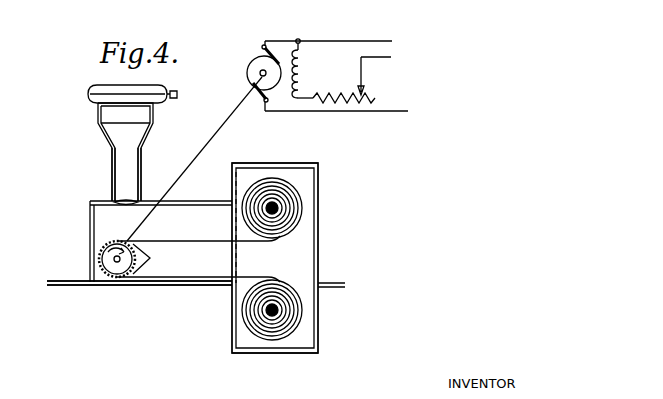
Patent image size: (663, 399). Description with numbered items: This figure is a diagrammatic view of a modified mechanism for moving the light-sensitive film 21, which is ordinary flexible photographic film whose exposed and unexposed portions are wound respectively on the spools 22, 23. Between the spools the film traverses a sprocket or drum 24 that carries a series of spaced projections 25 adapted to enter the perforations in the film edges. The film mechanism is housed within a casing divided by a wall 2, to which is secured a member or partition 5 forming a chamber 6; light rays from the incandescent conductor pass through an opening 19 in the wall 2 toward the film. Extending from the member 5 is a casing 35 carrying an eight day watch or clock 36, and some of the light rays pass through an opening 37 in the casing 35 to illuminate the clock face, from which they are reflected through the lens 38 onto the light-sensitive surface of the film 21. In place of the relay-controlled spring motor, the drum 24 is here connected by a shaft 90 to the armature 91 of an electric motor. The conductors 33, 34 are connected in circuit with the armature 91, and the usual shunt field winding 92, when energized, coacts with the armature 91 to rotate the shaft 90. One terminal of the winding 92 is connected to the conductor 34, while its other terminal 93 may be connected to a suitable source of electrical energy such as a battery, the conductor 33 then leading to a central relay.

The wall 2 is at (173, 286).
The member or partition 5 is at (318, 198).
The chamber 6 is at (296, 257).
The opening 19 is at (83, 285).
The light-sensitive film 21 is at (215, 241).
The spool 22 is at (274, 206).
The spool 23 is at (273, 312).
The drum 24 is at (117, 262).
The projections 25 is at (151, 258).
The conductor 33 is at (368, 111).
The conductor 34 is at (333, 41).
The casing 35 is at (146, 138).
The clock 36 is at (165, 89).
The opening 37 is at (102, 134).
The lens 38 is at (130, 200).
The shaft 90 is at (206, 151).
The armature 91 is at (258, 60).
The shunt field winding 92 is at (302, 68).
The terminal 93 is at (391, 57).